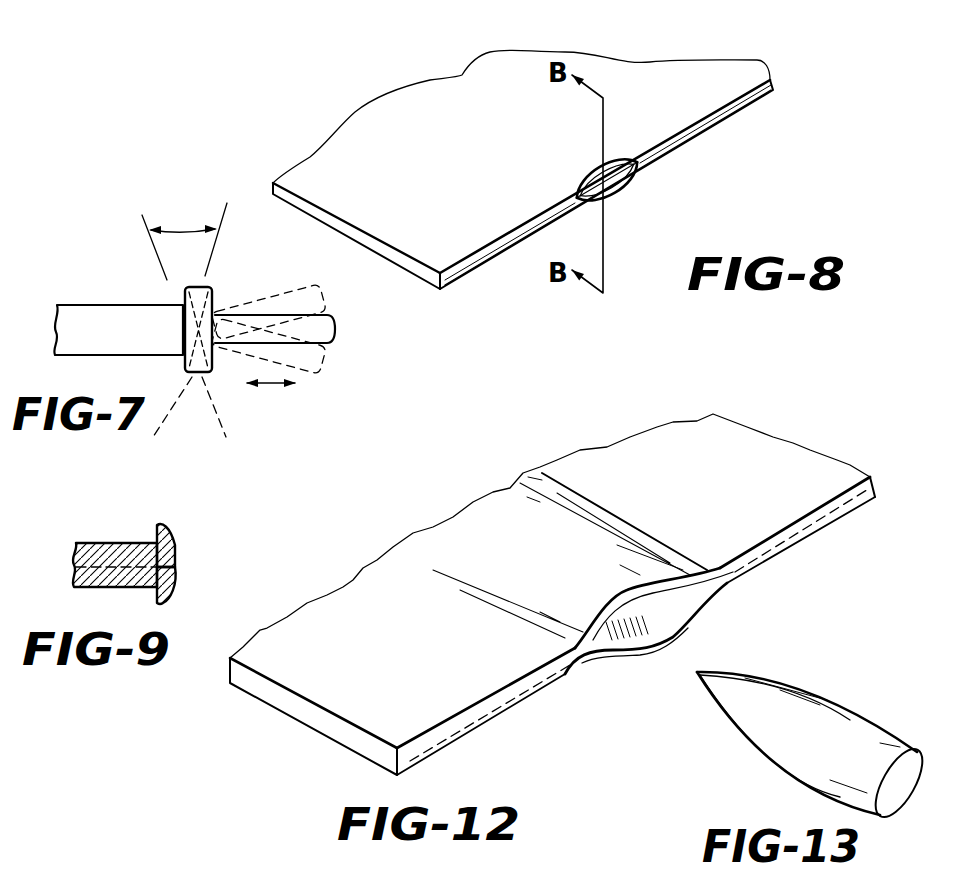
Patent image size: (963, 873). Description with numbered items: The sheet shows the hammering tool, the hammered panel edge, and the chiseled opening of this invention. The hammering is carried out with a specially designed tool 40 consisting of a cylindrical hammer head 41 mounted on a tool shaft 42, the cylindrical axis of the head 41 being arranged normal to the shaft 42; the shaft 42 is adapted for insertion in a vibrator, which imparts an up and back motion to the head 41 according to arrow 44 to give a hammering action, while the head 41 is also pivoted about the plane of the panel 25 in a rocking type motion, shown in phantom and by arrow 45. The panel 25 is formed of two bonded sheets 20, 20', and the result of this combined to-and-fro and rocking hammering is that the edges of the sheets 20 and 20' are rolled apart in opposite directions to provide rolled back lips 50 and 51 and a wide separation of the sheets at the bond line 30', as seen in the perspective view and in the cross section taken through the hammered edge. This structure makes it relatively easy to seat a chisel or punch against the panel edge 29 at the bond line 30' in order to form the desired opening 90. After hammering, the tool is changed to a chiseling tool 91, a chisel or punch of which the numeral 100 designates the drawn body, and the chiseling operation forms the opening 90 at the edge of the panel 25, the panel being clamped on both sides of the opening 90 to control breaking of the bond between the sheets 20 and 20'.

In FIG. 8, the sheet 20 is at (609, 152).
In FIG. 12, the sheet 20 is at (633, 612).
In FIG. 8, the sheet 20' is at (608, 187).
In FIG. 12, the sheet 20' is at (636, 639).
In FIG. 7, the panel 25 is at (112, 268).
In FIG. 8, the panel 25 is at (375, 158).
In FIG. 12, the panel 25 is at (354, 610).
In FIG. 8, the panel edge 29 is at (482, 265).
In FIG. 8, the bond line 30' is at (608, 182).
In FIG. 9, the bond line 30' is at (157, 563).
In FIG. 12, the bond line 30' is at (640, 624).
In FIG. 7, the tool 40 is at (240, 296).
In FIG. 7, the cylindrical hammer head 41 is at (190, 376).
In FIG. 7, the tool shaft 42 is at (338, 325).
In FIG. 7, the arrow 44 is at (273, 385).
In FIG. 7, the arrow 45 is at (181, 228).
In FIG. 8, the rolled back lip 50 is at (593, 167).
In FIG. 9, the rolled back lip 50 is at (163, 523).
In FIG. 8, the rolled back lip 51 is at (622, 200).
In FIG. 9, the rolled back lip 51 is at (167, 603).
In FIG. 12, the opening 90 is at (669, 618).
In FIG. 13, the chiseling tool 91 is at (823, 720).
In FIG. 13, the tube 100 is at (698, 668).